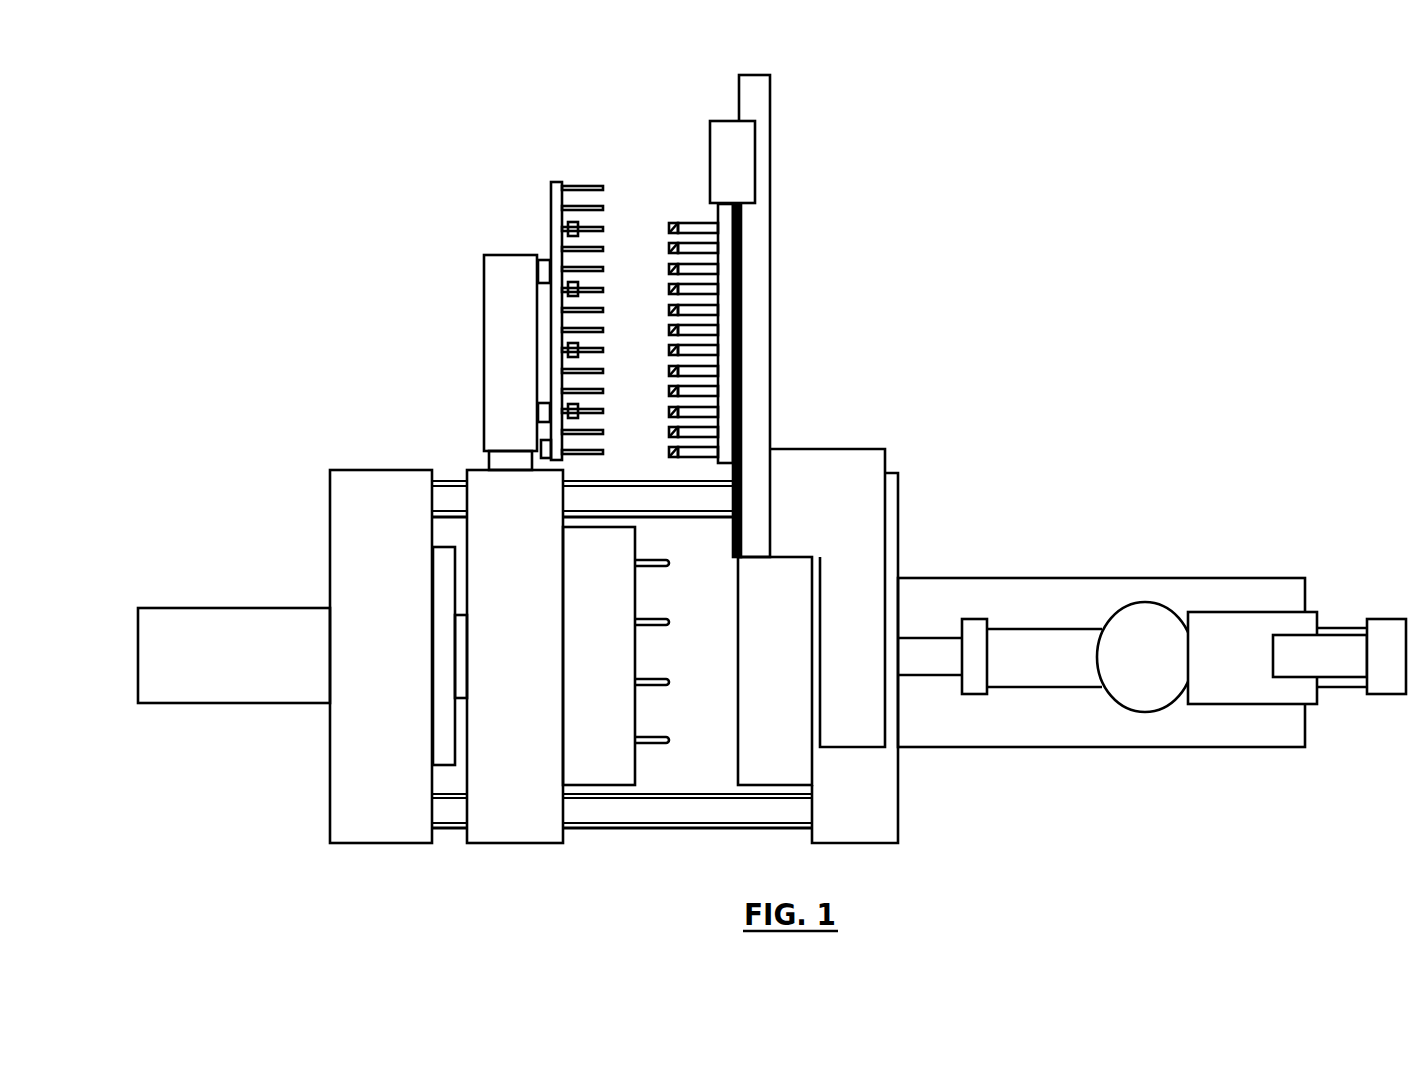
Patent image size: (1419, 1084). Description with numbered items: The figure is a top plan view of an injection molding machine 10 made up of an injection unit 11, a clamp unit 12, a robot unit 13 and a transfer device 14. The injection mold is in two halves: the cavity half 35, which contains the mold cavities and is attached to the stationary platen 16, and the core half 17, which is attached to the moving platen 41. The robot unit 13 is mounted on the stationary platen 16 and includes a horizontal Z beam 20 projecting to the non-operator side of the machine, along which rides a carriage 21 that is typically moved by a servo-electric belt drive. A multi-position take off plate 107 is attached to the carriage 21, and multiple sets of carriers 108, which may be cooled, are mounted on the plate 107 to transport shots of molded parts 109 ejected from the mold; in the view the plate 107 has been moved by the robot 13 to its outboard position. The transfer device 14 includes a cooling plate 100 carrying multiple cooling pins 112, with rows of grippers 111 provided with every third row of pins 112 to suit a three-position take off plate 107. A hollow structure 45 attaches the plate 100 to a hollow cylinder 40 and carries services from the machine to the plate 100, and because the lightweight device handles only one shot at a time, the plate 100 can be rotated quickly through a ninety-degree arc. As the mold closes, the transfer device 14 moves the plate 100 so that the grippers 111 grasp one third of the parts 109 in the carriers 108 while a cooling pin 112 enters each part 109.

The injection molding machine 10 is at (855, 385).
The injection unit 11 is at (1062, 550).
The clamp unit 12 is at (296, 768).
The robot unit 13 is at (806, 152).
The transfer device 14 is at (460, 208).
The stationary platen 16 is at (866, 808).
The core half 17 is at (612, 677).
The horizontal Z beam 20 is at (766, 255).
The carriage 21 is at (745, 137).
The cavity half 35 is at (789, 685).
The hollow cylinder 40 is at (490, 458).
The moving platen 41 is at (529, 677).
The hollow structure 45 is at (496, 334).
The cooling plate 100 is at (555, 208).
The multi-position take off plate 107 is at (728, 293).
The carriers 108 is at (740, 230).
The parts 109 is at (672, 224).
The grippers 111 is at (567, 251).
The cooling pins 112 is at (604, 187).